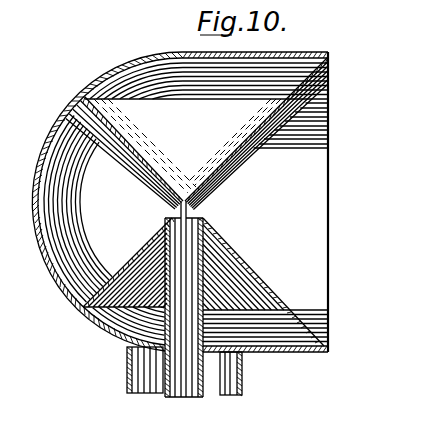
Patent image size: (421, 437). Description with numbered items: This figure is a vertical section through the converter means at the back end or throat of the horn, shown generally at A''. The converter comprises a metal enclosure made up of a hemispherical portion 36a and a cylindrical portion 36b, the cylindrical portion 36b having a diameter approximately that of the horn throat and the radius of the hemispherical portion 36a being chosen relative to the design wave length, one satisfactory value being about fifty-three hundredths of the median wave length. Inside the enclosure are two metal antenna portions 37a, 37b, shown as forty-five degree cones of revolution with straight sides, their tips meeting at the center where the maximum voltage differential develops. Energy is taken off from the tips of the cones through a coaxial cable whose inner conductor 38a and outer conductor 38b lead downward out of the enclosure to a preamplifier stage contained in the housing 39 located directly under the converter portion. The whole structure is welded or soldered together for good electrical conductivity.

The upper deflector section A'' is at (105, 140).
The hemispherical portion 36a is at (65, 287).
The cylindrical portion 36b is at (278, 353).
The antenna portion 37a is at (293, 87).
The antenna portion 37b is at (268, 290).
The inner conductor 38a is at (193, 212).
The outer conductor 38b is at (201, 367).
The housing 39 is at (127, 370).